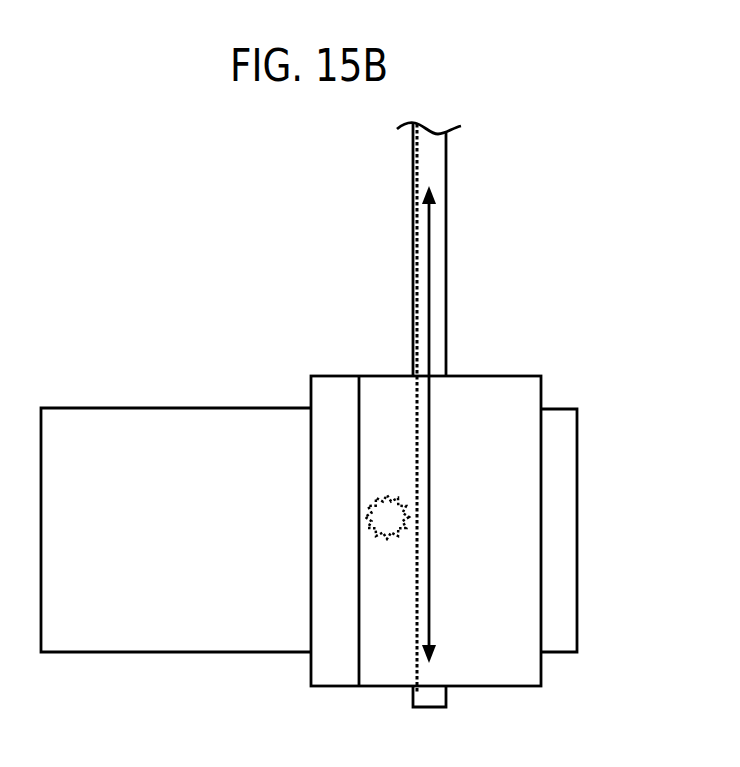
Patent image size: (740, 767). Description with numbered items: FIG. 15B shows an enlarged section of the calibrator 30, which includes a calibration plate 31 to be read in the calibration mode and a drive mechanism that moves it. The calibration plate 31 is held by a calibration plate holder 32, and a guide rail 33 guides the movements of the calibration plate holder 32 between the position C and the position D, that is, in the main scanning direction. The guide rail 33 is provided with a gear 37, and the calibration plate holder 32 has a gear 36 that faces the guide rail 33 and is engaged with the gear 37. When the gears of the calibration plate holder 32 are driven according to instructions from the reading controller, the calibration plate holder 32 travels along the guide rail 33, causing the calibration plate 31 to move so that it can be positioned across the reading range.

The calibrator 30 is at (497, 211).
The calibration plate 31 is at (131, 407).
The calibration plate holder 32 is at (389, 375).
The guide rail 33 is at (447, 300).
The gear 36 is at (406, 496).
The gear 37 is at (414, 226).